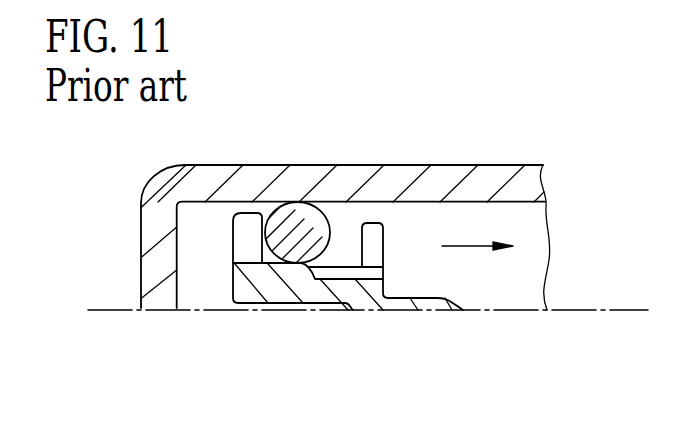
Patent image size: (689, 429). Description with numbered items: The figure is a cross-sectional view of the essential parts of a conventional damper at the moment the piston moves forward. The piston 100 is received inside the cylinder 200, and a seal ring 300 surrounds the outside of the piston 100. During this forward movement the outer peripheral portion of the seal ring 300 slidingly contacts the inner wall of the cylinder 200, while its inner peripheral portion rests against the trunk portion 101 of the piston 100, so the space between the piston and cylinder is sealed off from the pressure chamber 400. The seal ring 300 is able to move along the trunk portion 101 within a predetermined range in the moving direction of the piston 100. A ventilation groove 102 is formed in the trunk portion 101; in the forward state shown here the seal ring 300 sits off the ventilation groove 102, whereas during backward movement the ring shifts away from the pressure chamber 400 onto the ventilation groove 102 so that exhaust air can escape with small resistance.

The piston 100 is at (300, 280).
The trunk portion 101 is at (262, 290).
The ventilation groove 102 is at (367, 282).
The cylinder 200 is at (495, 166).
The seal ring 300 is at (295, 205).
The pressure chamber 400 is at (192, 250).